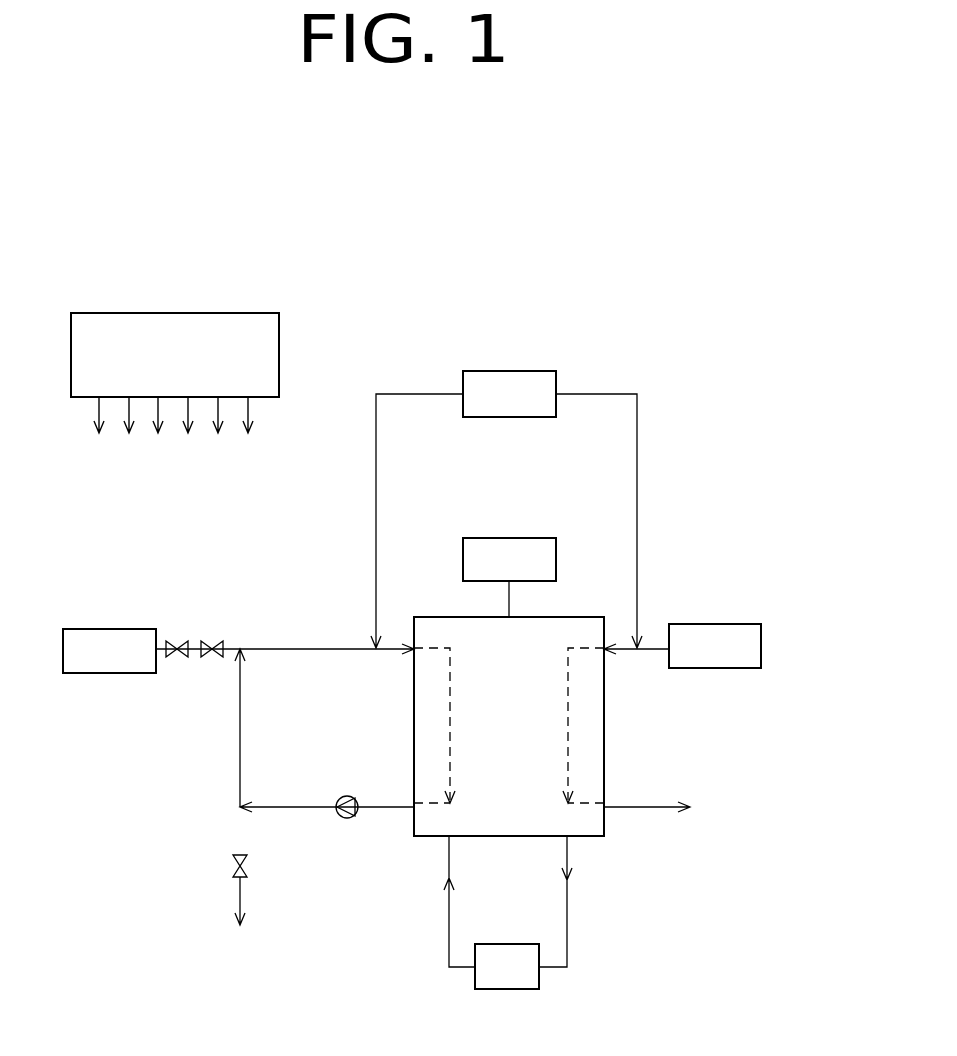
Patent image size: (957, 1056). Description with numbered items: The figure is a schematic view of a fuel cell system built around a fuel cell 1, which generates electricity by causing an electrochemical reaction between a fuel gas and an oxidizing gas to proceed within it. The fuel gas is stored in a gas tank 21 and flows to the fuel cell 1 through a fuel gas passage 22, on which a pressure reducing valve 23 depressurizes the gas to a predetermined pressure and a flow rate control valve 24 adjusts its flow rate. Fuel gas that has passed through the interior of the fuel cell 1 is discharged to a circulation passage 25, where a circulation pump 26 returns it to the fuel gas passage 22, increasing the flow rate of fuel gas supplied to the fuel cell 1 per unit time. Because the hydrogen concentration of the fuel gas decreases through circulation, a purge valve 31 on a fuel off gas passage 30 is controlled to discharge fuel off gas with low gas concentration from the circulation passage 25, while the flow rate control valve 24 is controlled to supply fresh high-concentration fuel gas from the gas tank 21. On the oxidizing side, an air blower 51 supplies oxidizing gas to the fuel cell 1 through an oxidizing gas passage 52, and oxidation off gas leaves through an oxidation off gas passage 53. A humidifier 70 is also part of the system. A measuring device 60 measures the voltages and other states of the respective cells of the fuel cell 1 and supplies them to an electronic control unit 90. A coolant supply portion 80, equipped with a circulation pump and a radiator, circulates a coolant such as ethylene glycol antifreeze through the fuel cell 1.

The fuel cell 1 is at (497, 836).
The gas tank 21 is at (110, 629).
The fuel gas passage 22 is at (317, 647).
The pressure reducing valve 23 is at (177, 642).
The flow rate control valve 24 is at (210, 642).
The circulation passage 25 is at (289, 806).
The circulation pump 26 is at (356, 798).
The fuel off gas passage 30 is at (233, 897).
The purge valve 31 is at (233, 863).
The air blower 51 is at (715, 624).
The oxidizing gas passage 52 is at (650, 650).
The oxidation off gas passage 53 is at (630, 805).
The measuring device 60 is at (510, 538).
The humidifier 70 is at (510, 371).
The coolant supply portion 80 is at (470, 980).
The electronic control unit (ECU) 90 is at (279, 342).